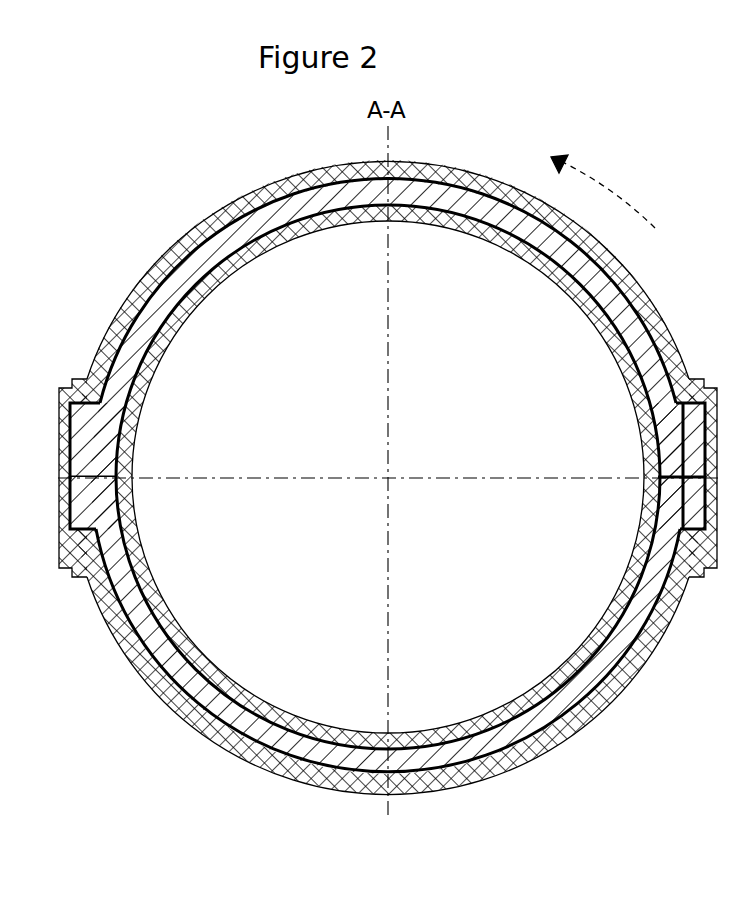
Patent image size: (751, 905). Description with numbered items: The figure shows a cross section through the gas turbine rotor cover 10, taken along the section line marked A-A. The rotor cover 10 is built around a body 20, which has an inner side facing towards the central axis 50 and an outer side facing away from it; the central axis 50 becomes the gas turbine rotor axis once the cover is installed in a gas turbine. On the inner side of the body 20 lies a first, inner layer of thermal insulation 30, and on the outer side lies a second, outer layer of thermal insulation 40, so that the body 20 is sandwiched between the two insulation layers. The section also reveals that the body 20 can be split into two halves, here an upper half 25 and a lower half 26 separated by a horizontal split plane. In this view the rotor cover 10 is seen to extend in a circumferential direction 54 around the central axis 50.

The rotor cover 10 is at (388, 443).
The body 20 is at (258, 238).
The upper half 25 is at (105, 450).
The lower half 26 is at (118, 523).
The first layer of insulation 30 is at (222, 663).
The second layer of insulation 40 is at (291, 196).
The central axis 50 is at (392, 470).
The circumferential direction 54 is at (634, 207).